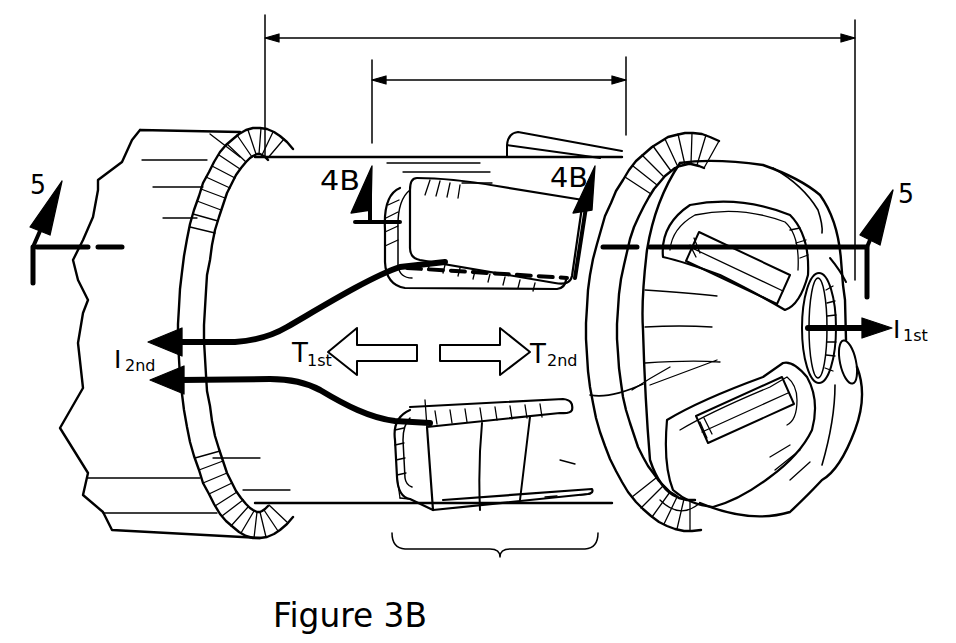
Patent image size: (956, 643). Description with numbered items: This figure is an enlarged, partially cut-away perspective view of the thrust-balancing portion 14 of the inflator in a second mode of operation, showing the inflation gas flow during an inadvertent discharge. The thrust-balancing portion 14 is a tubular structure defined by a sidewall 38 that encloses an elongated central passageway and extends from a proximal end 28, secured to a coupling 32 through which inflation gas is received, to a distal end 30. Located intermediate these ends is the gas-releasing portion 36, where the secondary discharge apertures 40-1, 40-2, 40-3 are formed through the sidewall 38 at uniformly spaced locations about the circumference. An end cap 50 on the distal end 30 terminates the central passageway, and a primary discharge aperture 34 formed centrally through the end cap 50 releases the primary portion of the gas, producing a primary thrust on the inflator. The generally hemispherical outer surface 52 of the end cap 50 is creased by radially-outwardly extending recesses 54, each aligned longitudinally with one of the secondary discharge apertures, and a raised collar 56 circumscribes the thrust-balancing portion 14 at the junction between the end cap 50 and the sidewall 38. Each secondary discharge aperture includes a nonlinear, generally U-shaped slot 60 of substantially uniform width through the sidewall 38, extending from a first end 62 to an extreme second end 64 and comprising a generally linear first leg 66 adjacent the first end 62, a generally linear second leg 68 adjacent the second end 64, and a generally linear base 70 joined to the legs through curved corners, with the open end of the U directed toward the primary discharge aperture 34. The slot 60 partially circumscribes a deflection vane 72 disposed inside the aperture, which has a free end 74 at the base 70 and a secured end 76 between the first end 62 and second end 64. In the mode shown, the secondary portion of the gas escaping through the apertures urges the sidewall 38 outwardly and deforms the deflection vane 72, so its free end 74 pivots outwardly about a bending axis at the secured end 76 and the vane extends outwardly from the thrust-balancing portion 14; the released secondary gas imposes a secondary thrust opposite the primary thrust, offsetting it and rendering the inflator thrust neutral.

The thrust-balancing portion 14 is at (560, 147).
The gas-releasing portion 36 is at (499, 100).
The proximal end 28 is at (294, 200).
The distal end 30 is at (613, 183).
The coupling 32 is at (146, 262).
The primary discharge aperture 34 is at (827, 318).
The sidewall 38 is at (264, 296).
The secondary discharge aperture 40-1 is at (505, 155).
The secondary discharge aperture 40-2 is at (240, 155).
The secondary discharge aperture 40-3 is at (383, 462).
The end cap 50 is at (722, 146).
The outer surface 52 is at (718, 238).
The recesses 54 is at (833, 235).
The raised collar 56 is at (686, 518).
The slot 60 is at (495, 560).
The first end 62 is at (520, 505).
The second end 64 is at (588, 507).
The first leg 66 is at (482, 510).
The second leg 68 is at (557, 503).
The base 70 is at (400, 505).
The deflection vane 72 is at (484, 226).
The free end 74 is at (424, 400).
The secured end 76 is at (567, 462).